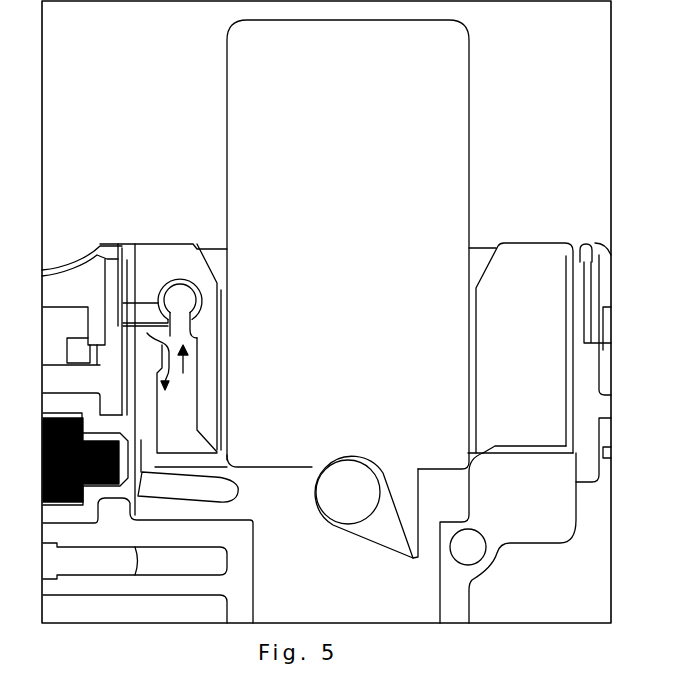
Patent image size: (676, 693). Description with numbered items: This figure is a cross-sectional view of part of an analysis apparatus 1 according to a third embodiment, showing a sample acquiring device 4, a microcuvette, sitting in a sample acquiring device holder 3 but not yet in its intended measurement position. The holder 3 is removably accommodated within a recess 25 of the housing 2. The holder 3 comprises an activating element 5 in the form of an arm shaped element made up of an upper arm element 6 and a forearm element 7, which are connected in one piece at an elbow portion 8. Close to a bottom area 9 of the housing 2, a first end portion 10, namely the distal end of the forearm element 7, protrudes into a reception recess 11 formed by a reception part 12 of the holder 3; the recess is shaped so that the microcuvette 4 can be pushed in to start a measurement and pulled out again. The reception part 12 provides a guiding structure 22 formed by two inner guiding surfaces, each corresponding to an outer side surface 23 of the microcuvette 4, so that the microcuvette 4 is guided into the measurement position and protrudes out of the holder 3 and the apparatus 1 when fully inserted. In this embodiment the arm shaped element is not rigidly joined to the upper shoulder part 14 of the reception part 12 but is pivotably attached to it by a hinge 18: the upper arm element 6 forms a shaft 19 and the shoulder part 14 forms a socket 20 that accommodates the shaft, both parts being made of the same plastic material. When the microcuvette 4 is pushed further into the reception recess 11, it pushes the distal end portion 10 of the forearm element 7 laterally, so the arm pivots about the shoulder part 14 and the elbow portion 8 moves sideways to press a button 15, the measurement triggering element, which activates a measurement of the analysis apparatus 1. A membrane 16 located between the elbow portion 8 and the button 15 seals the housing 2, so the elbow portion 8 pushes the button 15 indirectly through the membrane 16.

The analysis apparatus 1 is at (140, 124).
The housing 2 is at (545, 522).
The sample acquiring device holder 3 is at (513, 232).
The sample acquiring device 4 is at (449, 95).
The activating element 5 is at (147, 333).
The upper arm element 6 is at (148, 425).
The forearm element 7 is at (232, 489).
The elbow portion 8 is at (145, 470).
The bottom area 9 is at (419, 579).
The first end portion 10 is at (252, 499).
The reception recess 11 is at (287, 473).
The reception part 12 is at (516, 262).
The shoulder part 14 is at (172, 248).
The button 15 is at (43, 468).
The membrane 16 is at (65, 515).
The hinge 18 is at (189, 370).
The shaft 19 is at (175, 298).
The socket 20 is at (185, 283).
The guiding structure 22 is at (233, 329).
The outer side surface 23 is at (227, 113).
The recess 25 is at (127, 355).